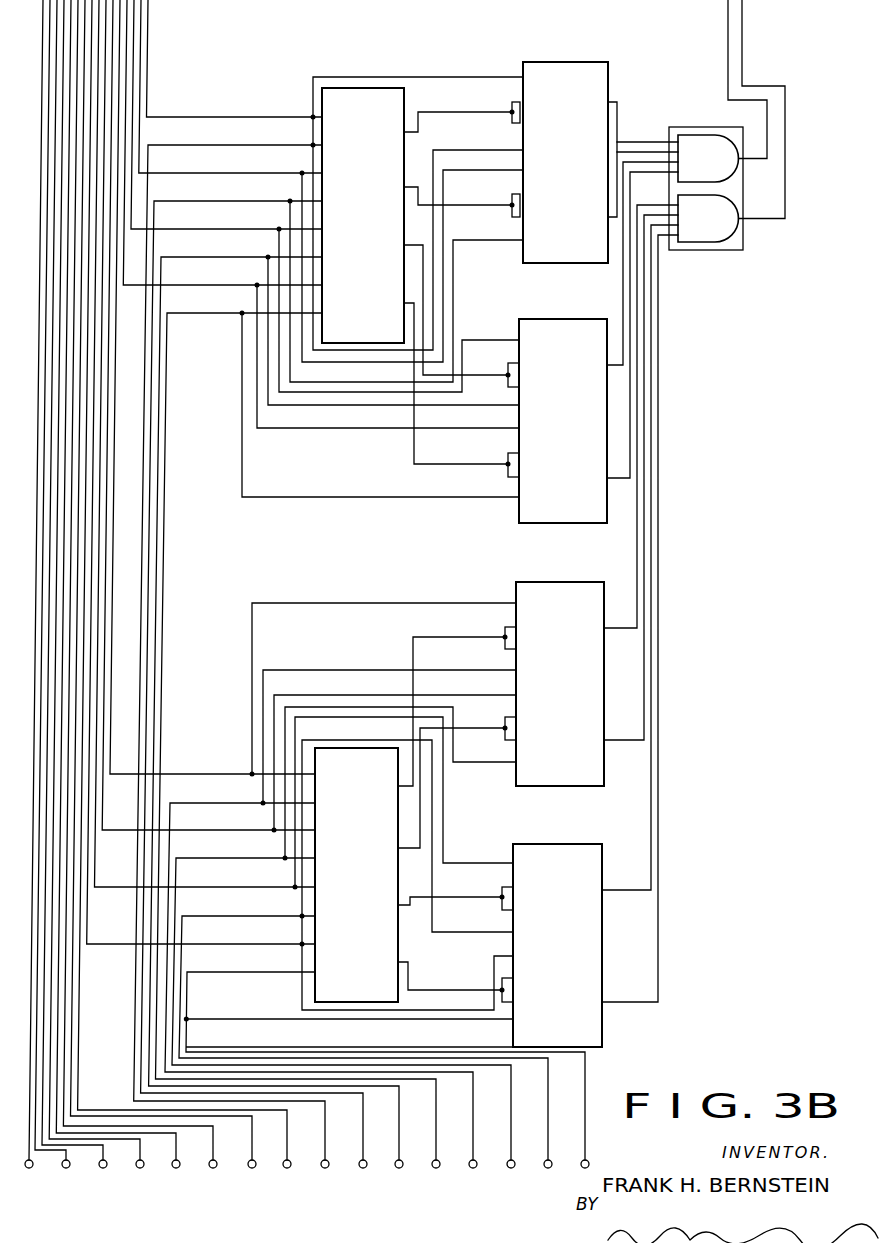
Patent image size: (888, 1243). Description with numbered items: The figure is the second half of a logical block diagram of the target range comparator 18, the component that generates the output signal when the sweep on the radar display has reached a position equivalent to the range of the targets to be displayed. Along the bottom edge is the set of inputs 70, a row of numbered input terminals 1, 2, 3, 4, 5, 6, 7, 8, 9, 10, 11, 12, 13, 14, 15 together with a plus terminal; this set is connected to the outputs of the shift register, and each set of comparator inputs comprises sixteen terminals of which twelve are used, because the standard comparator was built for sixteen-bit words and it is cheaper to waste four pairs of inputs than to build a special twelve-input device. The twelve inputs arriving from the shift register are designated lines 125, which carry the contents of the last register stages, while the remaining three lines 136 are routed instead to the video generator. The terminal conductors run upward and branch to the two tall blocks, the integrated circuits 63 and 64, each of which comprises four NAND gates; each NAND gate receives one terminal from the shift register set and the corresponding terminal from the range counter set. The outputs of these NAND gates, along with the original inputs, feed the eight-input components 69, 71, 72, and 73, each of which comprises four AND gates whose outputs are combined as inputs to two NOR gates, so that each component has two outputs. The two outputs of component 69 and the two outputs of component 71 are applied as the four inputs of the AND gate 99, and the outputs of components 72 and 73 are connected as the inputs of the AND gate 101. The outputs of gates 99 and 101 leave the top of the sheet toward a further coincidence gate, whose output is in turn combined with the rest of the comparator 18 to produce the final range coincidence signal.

The target range comparator 18 is at (421, 611).
The integrated circuit 63 is at (402, 115).
The integrated circuit 64 is at (368, 890).
The component 69 is at (600, 90).
The component 71 is at (570, 325).
The component 72 is at (568, 595).
The component 73 is at (565, 855).
The AND gate 99 is at (716, 168).
The AND gate 101 is at (721, 232).
The lines 125 is at (238, 143).
The lines 136 is at (546, 1170).
The set of inputs 70 is at (627, 1163).
The input terminal 1 is at (27, 1175).
The input terminal 2 is at (66, 1175).
The input terminal 3 is at (102, 1175).
The input terminal 4 is at (140, 1175).
The input terminal 5 is at (176, 1175).
The input terminal 6 is at (213, 1175).
The input terminal 7 is at (251, 1175).
The input terminal 8 is at (287, 1175).
The input terminal 9 is at (324, 1175).
The input terminal 10 is at (360, 1175).
The input terminal 11 is at (397, 1175).
The input terminal 12 is at (435, 1175).
The input terminal 13 is at (472, 1175).
The input terminal 14 is at (510, 1175).
The input terminal 15 is at (547, 1175).